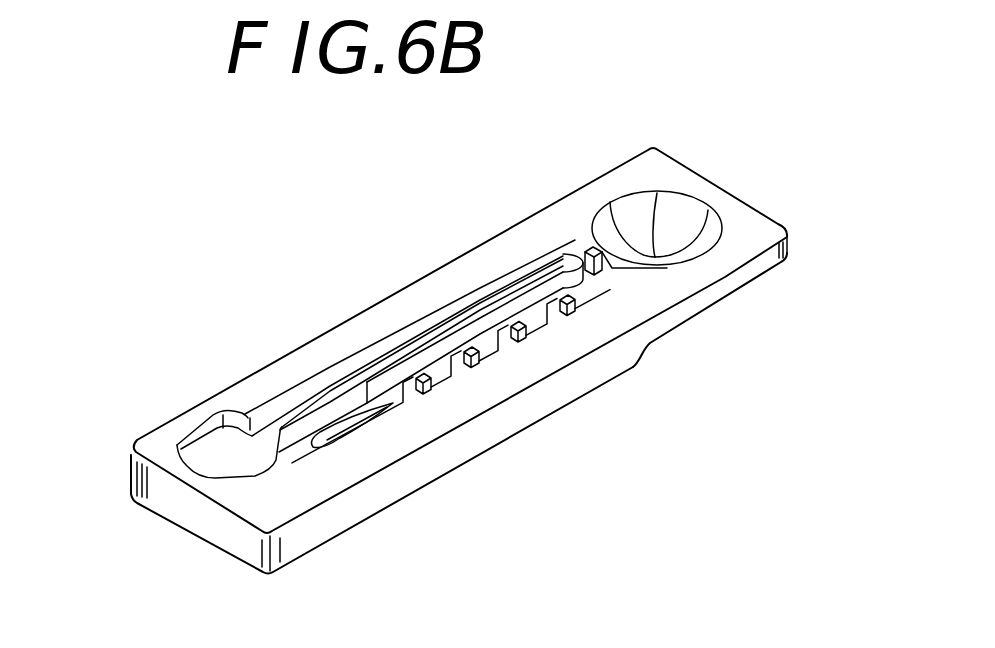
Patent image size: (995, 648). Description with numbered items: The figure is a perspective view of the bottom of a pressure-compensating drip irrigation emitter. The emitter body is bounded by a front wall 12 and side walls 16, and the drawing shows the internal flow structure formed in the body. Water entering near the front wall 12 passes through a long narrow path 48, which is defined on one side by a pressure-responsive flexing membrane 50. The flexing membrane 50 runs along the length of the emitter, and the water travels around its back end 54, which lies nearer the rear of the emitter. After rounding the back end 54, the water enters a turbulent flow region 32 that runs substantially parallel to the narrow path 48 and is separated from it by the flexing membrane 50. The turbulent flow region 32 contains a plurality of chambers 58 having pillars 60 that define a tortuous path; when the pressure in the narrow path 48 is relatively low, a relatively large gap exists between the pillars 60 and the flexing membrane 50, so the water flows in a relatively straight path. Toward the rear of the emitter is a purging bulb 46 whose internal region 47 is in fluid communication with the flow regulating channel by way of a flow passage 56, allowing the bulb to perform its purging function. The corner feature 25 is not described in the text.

The front wall 12 is at (192, 515).
The side walls 16 is at (707, 300).
The rounded corner 25 is at (200, 380).
The turbulent flow region 32 is at (648, 372).
The purging bulb 46 is at (678, 193).
The internal region 47 is at (708, 240).
The long narrow path 48 is at (330, 390).
The flexing membrane 50 is at (400, 357).
The back end 54 is at (575, 258).
The flow passage 56 is at (603, 250).
The chambers 58 is at (460, 350).
The pillars 60 is at (417, 402).